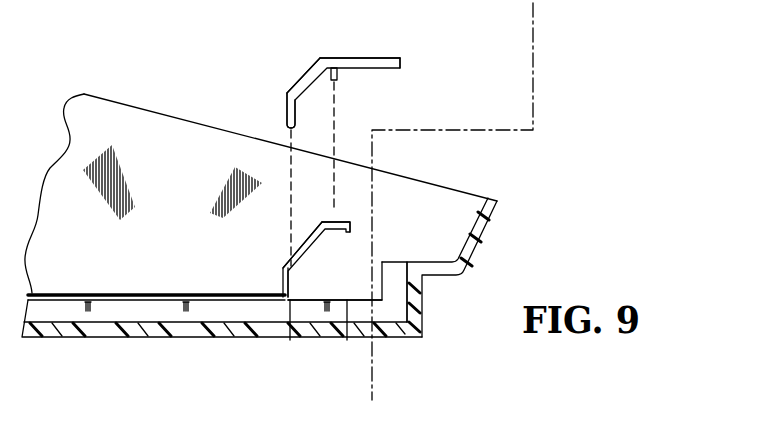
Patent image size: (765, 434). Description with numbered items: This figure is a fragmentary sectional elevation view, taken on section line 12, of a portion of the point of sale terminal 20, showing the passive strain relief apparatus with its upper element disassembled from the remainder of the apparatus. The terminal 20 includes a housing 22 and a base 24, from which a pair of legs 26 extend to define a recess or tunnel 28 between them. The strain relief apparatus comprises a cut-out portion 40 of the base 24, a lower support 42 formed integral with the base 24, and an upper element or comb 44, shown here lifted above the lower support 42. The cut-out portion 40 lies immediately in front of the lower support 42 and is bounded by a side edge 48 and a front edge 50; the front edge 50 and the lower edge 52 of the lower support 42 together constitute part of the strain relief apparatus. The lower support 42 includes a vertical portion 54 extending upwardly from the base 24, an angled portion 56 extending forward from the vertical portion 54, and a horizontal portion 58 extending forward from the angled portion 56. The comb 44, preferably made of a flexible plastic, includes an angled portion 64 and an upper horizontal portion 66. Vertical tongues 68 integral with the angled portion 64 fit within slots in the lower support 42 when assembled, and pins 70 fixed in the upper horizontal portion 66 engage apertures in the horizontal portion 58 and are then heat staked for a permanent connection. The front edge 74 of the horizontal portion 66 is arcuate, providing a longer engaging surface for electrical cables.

The section line 12- 12 is at (545, 18).
The point of sale terminal 20 is at (522, 172).
The housing 22 is at (106, 113).
The base 24 is at (140, 296).
The legs 26 is at (212, 338).
The recess or tunnel 28 is at (115, 302).
The cut-out portion 40 is at (359, 292).
The lower support 42 is at (300, 252).
The upper element or comb 44 is at (352, 48).
The side edge 48 is at (347, 340).
The front edge 50 is at (382, 262).
The lower edge 52 is at (290, 340).
The vertical portion 54 is at (282, 274).
The angled portion 56 is at (283, 264).
The horizontal portion 58 is at (349, 222).
The angled portion 64 is at (306, 70).
The upper horizontal portion 66 is at (388, 58).
The vertical tongues 68 is at (287, 118).
The pins 70 is at (339, 76).
The front edge 74 is at (403, 65).